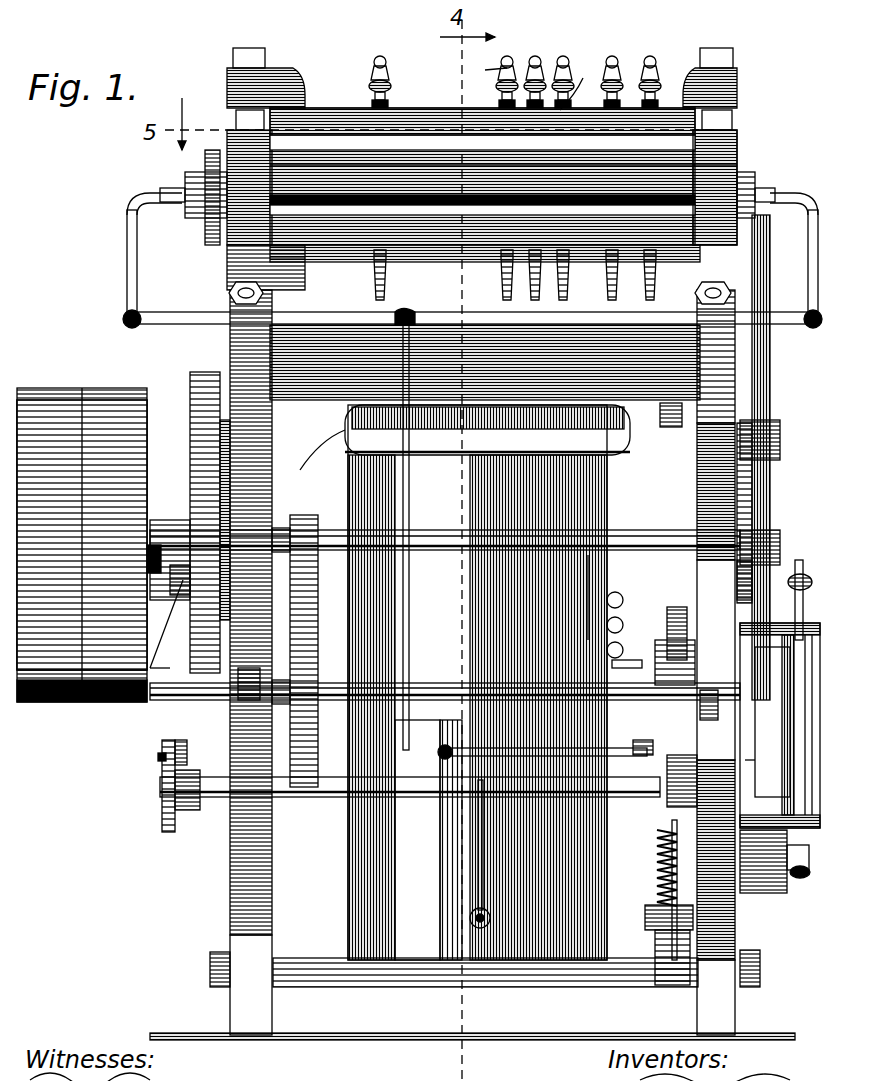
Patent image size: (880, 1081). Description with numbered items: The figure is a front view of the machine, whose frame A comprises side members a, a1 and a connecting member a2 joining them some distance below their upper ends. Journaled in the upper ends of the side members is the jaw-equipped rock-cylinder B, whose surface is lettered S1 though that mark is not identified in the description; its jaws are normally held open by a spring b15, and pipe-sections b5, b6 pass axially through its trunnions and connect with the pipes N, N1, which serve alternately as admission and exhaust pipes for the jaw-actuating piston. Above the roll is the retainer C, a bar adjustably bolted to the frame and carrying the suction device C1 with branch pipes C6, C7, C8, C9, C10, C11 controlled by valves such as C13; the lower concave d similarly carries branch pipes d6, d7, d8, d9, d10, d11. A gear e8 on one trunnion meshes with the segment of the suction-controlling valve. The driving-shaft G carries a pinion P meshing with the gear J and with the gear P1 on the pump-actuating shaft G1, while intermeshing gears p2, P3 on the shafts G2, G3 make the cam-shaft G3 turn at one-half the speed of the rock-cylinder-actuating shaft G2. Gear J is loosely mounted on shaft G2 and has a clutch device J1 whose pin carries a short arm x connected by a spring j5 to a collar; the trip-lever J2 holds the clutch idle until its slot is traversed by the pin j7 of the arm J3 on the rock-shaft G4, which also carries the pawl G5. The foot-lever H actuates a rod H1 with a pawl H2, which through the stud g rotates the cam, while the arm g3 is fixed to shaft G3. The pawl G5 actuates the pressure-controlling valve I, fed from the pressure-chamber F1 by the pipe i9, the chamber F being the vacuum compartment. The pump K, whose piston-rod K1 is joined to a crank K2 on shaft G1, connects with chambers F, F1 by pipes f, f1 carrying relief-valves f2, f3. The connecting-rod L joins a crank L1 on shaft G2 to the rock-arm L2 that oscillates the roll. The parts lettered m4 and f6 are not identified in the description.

The frame A is at (230, 858).
The side member a is at (268, 900).
The side member a1 is at (700, 990).
The connecting member a2 is at (485, 362).
The rock-cylinder B is at (485, 185).
The cylinder surface S1 is at (482, 179).
The leaf confining and holding member C is at (247, 54).
The suction device C1 is at (473, 78).
The valve C13 is at (578, 112).
The branch pipe C6 is at (378, 60).
The branch pipe C7 is at (507, 56).
The branch pipe C8 is at (535, 56).
The branch pipe C9 is at (565, 56).
The branch pipe C10 is at (613, 56).
The branch pipe C11 is at (651, 56).
The leaf confining member d is at (232, 285).
The branch pipe d6 is at (376, 294).
The branch pipe d7 is at (503, 295).
The branch pipe d8 is at (533, 305).
The branch pipe d9 is at (563, 305).
The branch pipe d10 is at (612, 305).
The branch pipe d11 is at (650, 305).
The pipe N is at (127, 272).
The pipe N1 is at (808, 292).
The pipe-section b5 is at (175, 190).
The pipe-section b6 is at (776, 196).
The spring b15 is at (700, 165).
The gear e8 is at (210, 240).
The connecting-rod L is at (770, 392).
The crank L1 is at (745, 576).
The rock-arm L2 is at (735, 225).
The gear P1 is at (192, 380).
The pinion P is at (193, 522).
The gear p2 is at (304, 472).
The gear P3 is at (318, 646).
The gear J is at (205, 520).
The short arm x is at (160, 558).
The spring j5 is at (222, 565).
The clutch device J1 is at (150, 700).
The rock-lever J2 is at (162, 818).
The arm J3 is at (175, 750).
The pin j7 is at (158, 758).
The hub m4 is at (480, 688).
The driving-shaft G is at (618, 540).
The pump-actuating shaft G1 is at (485, 430).
The rock-cylinder-actuating shaft G2 is at (445, 647).
The cam-shaft G3 is at (462, 683).
The pawl-equipped shaft G4 is at (326, 800).
The pawl G5 is at (758, 755).
The exhaust compartment F is at (477, 682).
The pressure compartment F1 is at (417, 840).
The pipe i9 is at (476, 880).
The pressure-controlling valve I is at (685, 790).
The arm g3 is at (636, 745).
The foot-lever H is at (657, 896).
The rod H1 is at (680, 440).
The pawl H2 is at (688, 620).
The pin g is at (688, 662).
The relief-valve f2 is at (624, 600).
The valve lever f6 is at (629, 662).
The relief-valve f3 is at (588, 560).
The pipe f is at (800, 595).
The pipe f1 is at (778, 680).
The pump K is at (780, 758).
The piston-rod K1 is at (772, 536).
The crank K2 is at (772, 460).